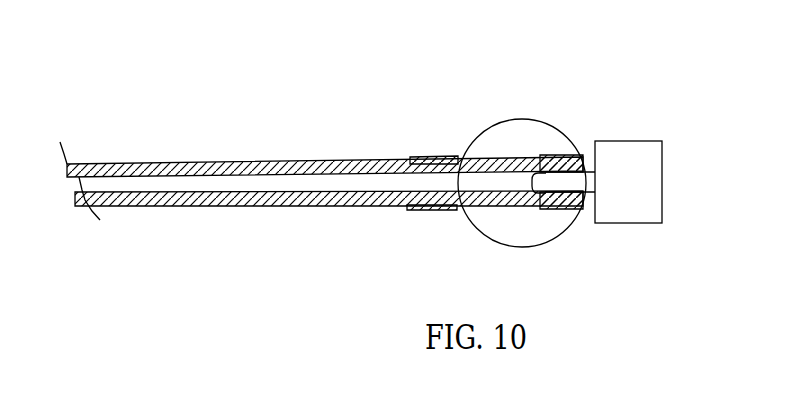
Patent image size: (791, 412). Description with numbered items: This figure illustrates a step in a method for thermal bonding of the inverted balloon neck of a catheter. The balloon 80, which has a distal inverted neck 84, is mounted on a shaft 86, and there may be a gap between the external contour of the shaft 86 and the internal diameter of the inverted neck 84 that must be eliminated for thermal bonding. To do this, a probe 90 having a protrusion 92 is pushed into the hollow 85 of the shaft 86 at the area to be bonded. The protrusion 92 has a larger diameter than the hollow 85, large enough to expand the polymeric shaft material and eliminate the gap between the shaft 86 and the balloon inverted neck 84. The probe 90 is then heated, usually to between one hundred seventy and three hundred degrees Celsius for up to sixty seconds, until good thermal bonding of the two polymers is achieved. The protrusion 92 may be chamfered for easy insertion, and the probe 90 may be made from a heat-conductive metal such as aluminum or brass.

The balloon 80 is at (513, 119).
The inverted neck 84 is at (557, 153).
The hollow 85 is at (345, 180).
The shaft 86 is at (305, 163).
The probe 90 is at (628, 200).
The protrusion 92 is at (553, 183).